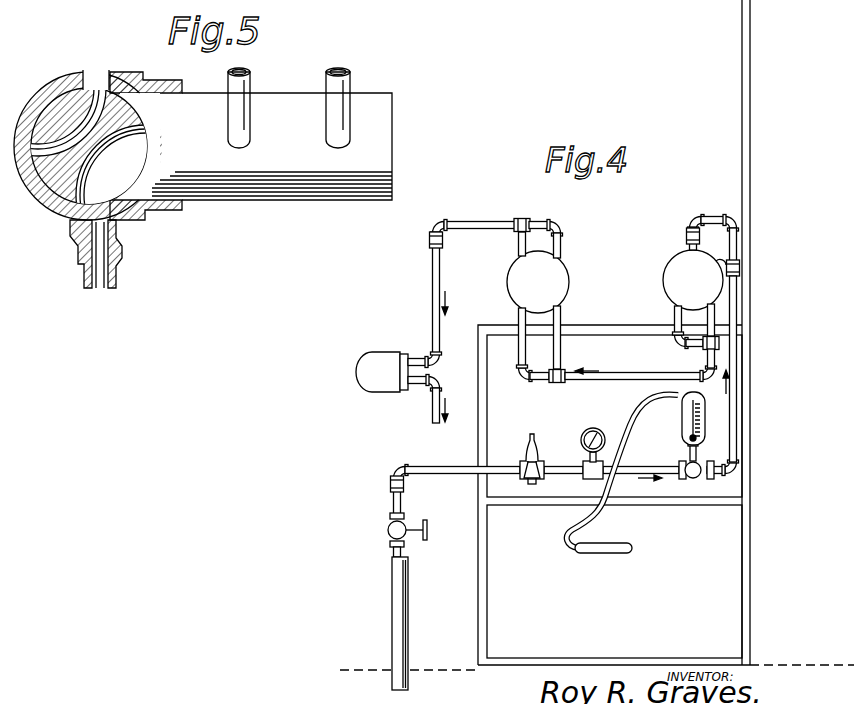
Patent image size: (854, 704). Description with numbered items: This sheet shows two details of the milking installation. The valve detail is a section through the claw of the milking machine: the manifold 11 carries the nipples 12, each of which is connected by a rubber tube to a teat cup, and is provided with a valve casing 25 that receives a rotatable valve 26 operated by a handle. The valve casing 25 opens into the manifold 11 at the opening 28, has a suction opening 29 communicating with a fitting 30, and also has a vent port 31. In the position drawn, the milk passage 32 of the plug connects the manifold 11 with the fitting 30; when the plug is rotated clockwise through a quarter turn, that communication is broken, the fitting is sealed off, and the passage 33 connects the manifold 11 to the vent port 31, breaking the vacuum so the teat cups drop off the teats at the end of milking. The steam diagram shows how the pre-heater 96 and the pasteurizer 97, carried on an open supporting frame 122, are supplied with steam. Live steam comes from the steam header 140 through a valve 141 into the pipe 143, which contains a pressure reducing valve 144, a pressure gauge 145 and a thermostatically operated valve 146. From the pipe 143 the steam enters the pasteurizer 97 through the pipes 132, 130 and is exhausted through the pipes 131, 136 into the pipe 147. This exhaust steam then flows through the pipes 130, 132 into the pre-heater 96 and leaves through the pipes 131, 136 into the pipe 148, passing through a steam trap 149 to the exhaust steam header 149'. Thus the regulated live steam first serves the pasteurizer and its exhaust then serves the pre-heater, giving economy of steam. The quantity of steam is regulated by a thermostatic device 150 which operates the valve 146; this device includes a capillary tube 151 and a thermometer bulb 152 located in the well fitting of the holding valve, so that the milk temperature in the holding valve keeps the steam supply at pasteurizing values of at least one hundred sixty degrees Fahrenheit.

In FIG. 5, the manifold 11 is at (277, 200).
In FIG. 5, the nipples 12 is at (244, 80).
In FIG. 5, the valve casing 25 is at (122, 82).
In FIG. 5, the valve 26 is at (55, 108).
In FIG. 5, the opening into manifold 28 is at (170, 160).
In FIG. 5, the suction opening 29 is at (70, 226).
In FIG. 5, the fitting 30 is at (118, 272).
In FIG. 5, the vent port 31 is at (94, 76).
In FIG. 5, the milk passage 32 is at (152, 156).
In FIG. 5, the passage 33 is at (80, 120).
In FIG. 4, the pre-heater 96 is at (558, 278).
In FIG. 4, the pasteurizer 97 is at (672, 283).
In FIG. 4, the supporting frame 122 is at (748, 570).
In FIG. 4, the pipe 130 is at (518, 355).
In FIG. 4, the pipe 131 is at (518, 248).
In FIG. 4, the pipe 132 is at (562, 355).
In FIG. 4, the pipe 136 is at (562, 245).
In FIG. 4, the steam header 140 is at (392, 606).
In FIG. 4, the valve 141 is at (388, 530).
In FIG. 4, the pipe 143 is at (445, 460).
In FIG. 4, the pressure reducing valve 144 is at (528, 452).
In FIG. 4, the pressure gauge 145 is at (591, 479).
In FIG. 4, the thermostatically operated valve 146 is at (686, 462).
In FIG. 4, the pipe 147 is at (644, 372).
In FIG. 4, the pipe 148 is at (486, 220).
In FIG. 4, the steam trap 149 is at (399, 357).
In FIG. 4, the exhaust steam header 149' is at (410, 416).
In FIG. 4, the thermostatic device 150 is at (683, 430).
In FIG. 4, the hose 151 is at (640, 410).
In FIG. 4, the thermometer bulb 152 is at (598, 553).